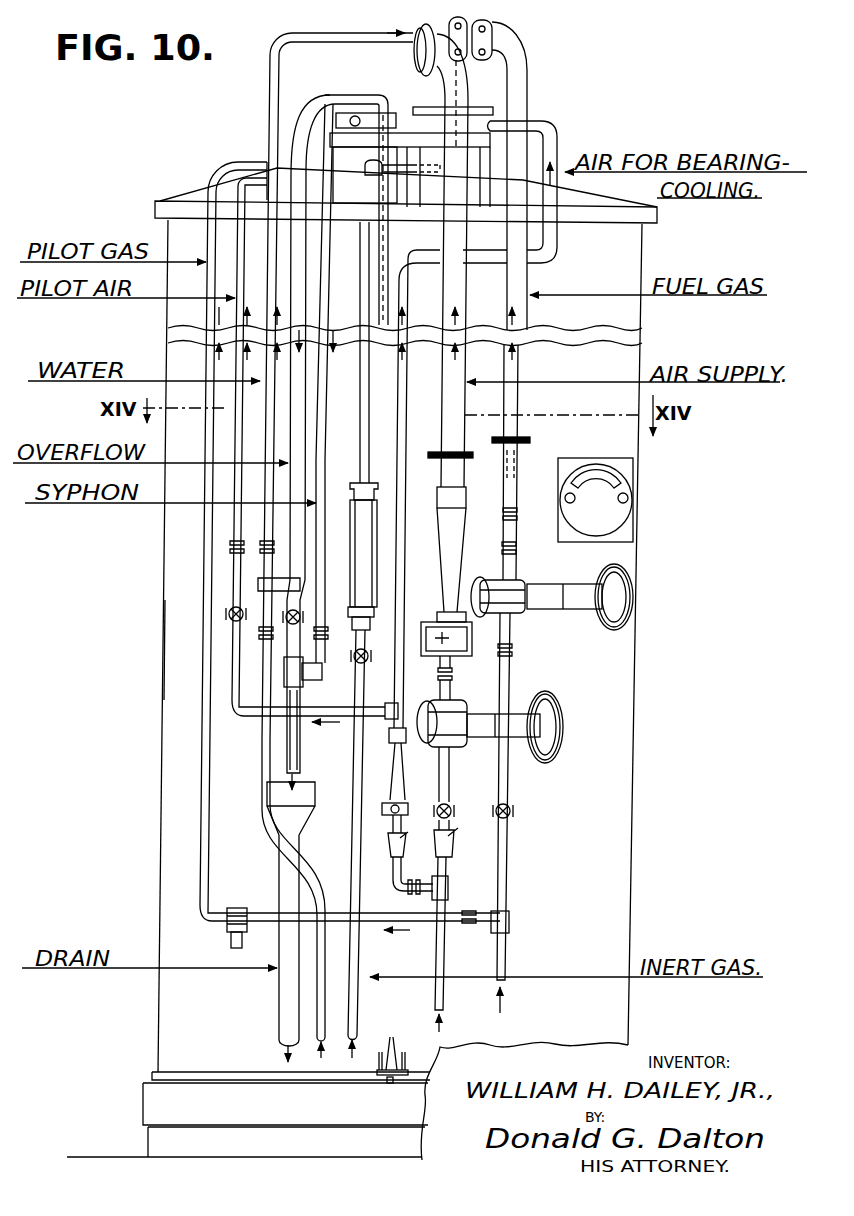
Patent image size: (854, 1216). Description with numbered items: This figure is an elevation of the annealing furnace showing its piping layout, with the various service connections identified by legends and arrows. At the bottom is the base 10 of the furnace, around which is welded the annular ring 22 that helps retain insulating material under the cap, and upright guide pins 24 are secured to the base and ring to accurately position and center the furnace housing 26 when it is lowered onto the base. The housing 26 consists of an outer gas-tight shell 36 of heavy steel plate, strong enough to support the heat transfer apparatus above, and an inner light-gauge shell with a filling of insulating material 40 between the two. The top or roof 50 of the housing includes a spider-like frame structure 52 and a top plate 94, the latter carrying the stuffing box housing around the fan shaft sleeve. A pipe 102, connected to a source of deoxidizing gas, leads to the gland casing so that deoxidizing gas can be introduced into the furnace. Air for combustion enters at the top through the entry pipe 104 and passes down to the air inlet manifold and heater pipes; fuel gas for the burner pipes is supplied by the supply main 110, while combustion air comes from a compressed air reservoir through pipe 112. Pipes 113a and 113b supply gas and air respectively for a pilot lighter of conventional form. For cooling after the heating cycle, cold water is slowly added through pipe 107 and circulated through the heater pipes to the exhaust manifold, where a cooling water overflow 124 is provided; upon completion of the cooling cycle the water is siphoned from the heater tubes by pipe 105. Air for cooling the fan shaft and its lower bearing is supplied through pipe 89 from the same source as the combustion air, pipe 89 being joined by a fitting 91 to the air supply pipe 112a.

The base 10 is at (147, 1134).
The annular ring 22 is at (145, 1104).
The upright guide pins 24 is at (410, 1020).
The furnace housing 26 is at (165, 592).
The outer gas-tight shell 36 is at (163, 638).
The insulating material 40 is at (384, 1078).
The top or roof 50 is at (196, 196).
The spider-like frame structure 52 is at (260, 182).
The pipe 89 is at (553, 238).
The fitting 91 is at (448, 884).
The top plate 94 is at (192, 200).
The pipe 102 is at (360, 441).
The entry pipe 104 is at (470, 118).
The pipe 105 is at (338, 98).
The pipe 107 is at (267, 362).
The supply main 110 is at (470, 72).
The pipe 112 is at (450, 288).
The air supply pipe 112a is at (444, 1004).
The pipe 113a is at (212, 231).
The pipe 113b is at (234, 284).
The cooling water overflow 124 is at (313, 132).